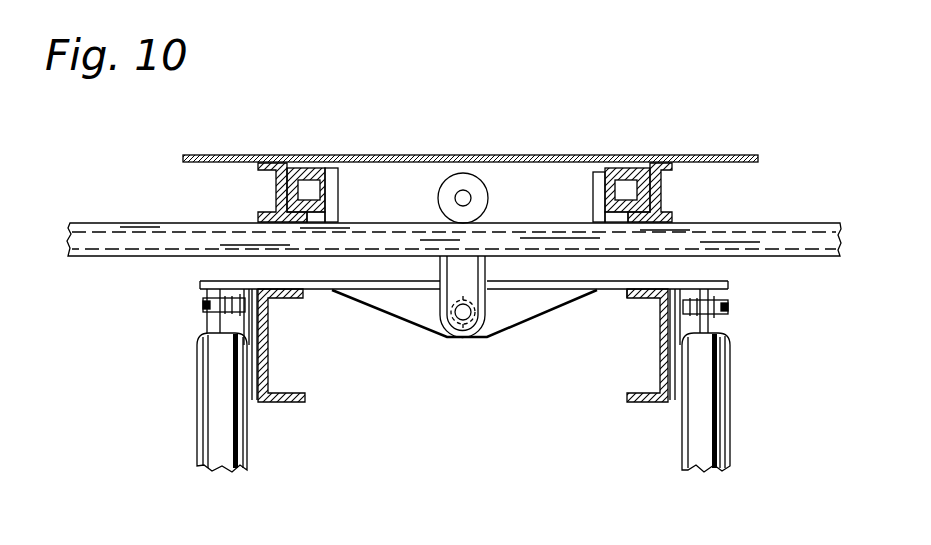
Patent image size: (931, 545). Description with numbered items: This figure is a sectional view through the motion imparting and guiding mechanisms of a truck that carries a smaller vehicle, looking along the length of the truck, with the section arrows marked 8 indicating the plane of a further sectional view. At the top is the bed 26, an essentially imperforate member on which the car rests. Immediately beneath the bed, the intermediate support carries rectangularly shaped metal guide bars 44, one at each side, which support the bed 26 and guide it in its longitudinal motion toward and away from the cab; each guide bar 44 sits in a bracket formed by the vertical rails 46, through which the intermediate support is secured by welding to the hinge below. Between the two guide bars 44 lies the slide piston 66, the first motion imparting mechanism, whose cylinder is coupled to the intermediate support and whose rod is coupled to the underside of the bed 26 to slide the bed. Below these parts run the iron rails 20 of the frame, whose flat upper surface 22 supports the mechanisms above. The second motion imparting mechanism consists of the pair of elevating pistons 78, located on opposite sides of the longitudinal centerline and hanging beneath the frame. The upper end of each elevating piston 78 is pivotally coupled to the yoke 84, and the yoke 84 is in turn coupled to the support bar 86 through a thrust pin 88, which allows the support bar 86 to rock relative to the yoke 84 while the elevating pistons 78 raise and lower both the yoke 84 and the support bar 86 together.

The section line 8- 8 is at (463, 120).
The iron rails 20 is at (268, 366).
The upper surface 22 is at (267, 282).
The bed 26 is at (635, 155).
The guide bars 44 is at (323, 167).
The vertical rails 46 is at (275, 190).
The slide piston 66 is at (488, 193).
The elevating pistons 78 is at (207, 370).
The yoke 84 is at (618, 293).
The support bar 86 is at (420, 250).
The thrust pin 88 is at (447, 337).